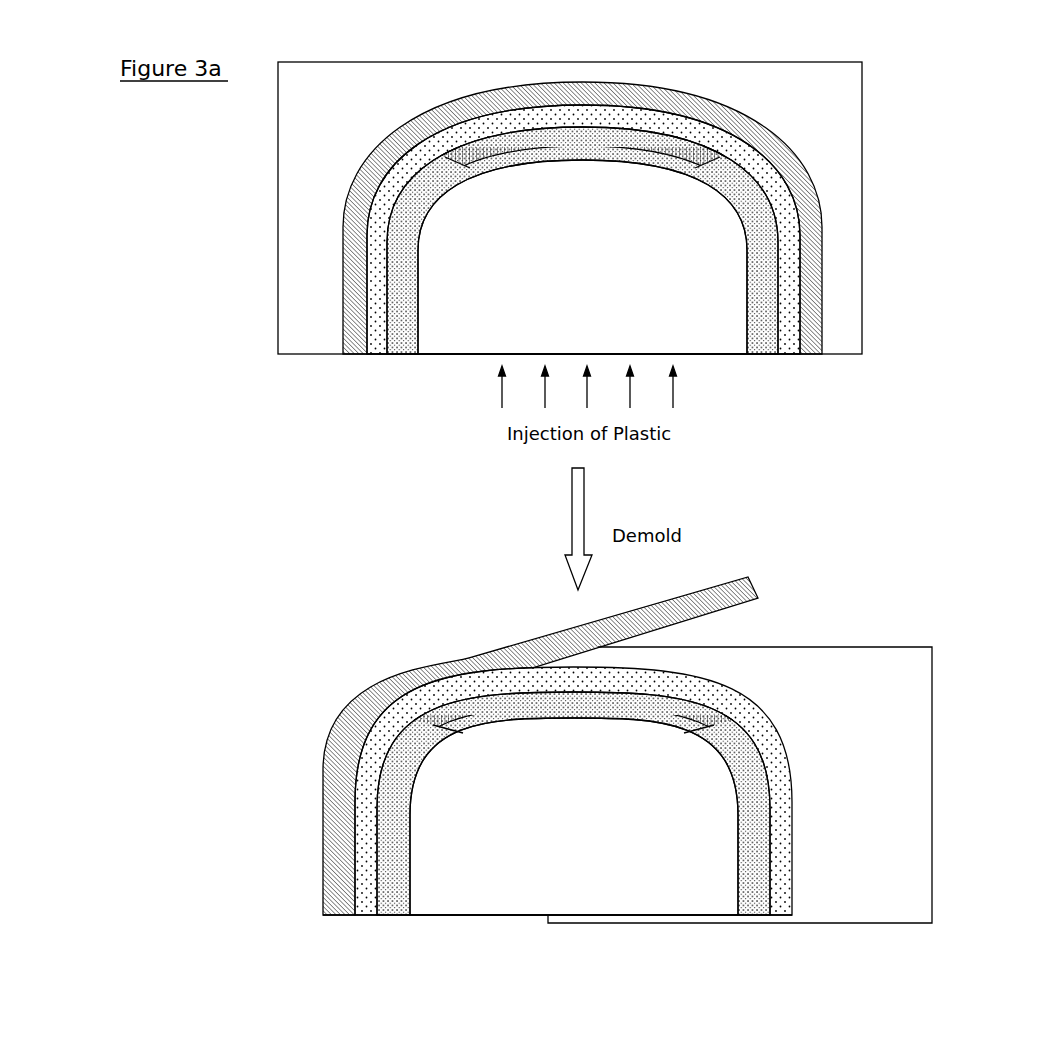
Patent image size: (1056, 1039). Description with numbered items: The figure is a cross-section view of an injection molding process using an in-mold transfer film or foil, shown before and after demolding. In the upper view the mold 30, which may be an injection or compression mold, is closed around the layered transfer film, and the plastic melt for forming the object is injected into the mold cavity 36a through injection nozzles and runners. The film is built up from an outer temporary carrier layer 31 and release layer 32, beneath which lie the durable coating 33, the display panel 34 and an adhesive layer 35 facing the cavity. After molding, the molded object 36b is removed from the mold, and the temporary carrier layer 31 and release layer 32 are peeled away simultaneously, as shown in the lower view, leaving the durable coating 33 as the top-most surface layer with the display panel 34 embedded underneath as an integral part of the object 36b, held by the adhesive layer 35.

The mold 30 is at (323, 170).
The temporary carrier layer 31 is at (644, 498).
The release layer 32 is at (793, 155).
The durable coating 33 is at (788, 222).
The display panel 34 is at (480, 147).
The adhesive layer 35 is at (768, 277).
The mold cavity 36a is at (693, 307).
The object 36b is at (667, 858).